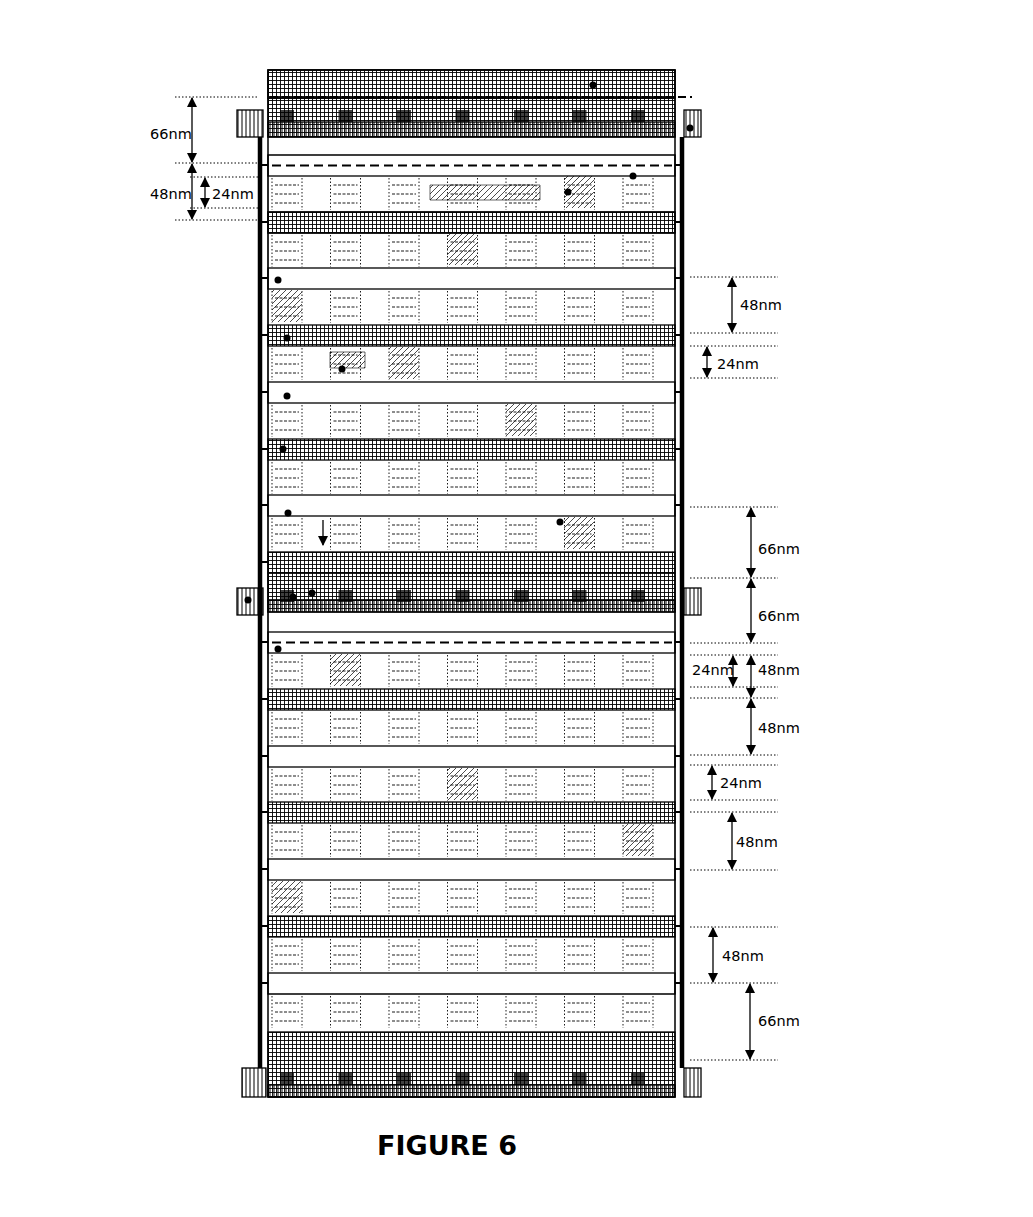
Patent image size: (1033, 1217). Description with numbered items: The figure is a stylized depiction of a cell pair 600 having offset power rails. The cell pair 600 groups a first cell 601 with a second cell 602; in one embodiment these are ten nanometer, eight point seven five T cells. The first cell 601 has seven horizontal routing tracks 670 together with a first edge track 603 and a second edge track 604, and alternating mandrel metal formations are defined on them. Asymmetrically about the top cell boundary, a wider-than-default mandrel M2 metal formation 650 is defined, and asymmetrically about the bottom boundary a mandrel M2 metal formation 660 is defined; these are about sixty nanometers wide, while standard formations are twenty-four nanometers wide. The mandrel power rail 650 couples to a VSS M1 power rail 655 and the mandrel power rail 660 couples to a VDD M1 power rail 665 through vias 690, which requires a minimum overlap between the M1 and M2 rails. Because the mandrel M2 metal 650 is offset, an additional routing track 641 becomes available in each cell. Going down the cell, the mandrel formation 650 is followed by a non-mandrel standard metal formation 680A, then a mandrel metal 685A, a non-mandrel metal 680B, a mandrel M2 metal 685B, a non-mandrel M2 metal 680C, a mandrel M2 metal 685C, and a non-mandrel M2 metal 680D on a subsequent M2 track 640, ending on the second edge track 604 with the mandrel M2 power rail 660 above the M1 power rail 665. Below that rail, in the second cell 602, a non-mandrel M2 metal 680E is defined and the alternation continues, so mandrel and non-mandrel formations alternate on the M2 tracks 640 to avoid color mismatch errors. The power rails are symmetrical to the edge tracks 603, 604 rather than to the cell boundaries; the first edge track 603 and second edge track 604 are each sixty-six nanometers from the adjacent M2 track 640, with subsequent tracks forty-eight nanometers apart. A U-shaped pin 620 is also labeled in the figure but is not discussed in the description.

The cell pair 600 is at (160, 40).
The first cell 601 is at (128, 118).
The second cell 602 is at (135, 1073).
The first edge track 603 is at (360, 69).
The second edge track 604 is at (262, 760).
The U-shaped pin 620 is at (690, 157).
The M2 tracks 640 is at (262, 895).
The additional routing track 641 is at (690, 190).
The mandrel M2 metal formation 650 is at (600, 80).
The VSS M1 power rail 655 is at (692, 128).
The mandrel M2 metal formation 660 is at (262, 627).
The VDD M1 power rail 665 is at (240, 605).
The horizontal routing tracks 670 is at (262, 372).
The non-mandrel standard metal formation 680A is at (690, 244).
The non-mandrel metal 680B is at (262, 297).
The non-mandrel M2 metal 680C is at (262, 437).
The non-mandrel M2 metal 680D is at (262, 533).
The non-mandrel M2 metal 680E is at (262, 672).
The mandrel metal 685A is at (262, 238).
The mandrel M2 metal 685B is at (262, 360).
The mandrel M2 metal 685C is at (262, 487).
The vias 690 is at (620, 500).